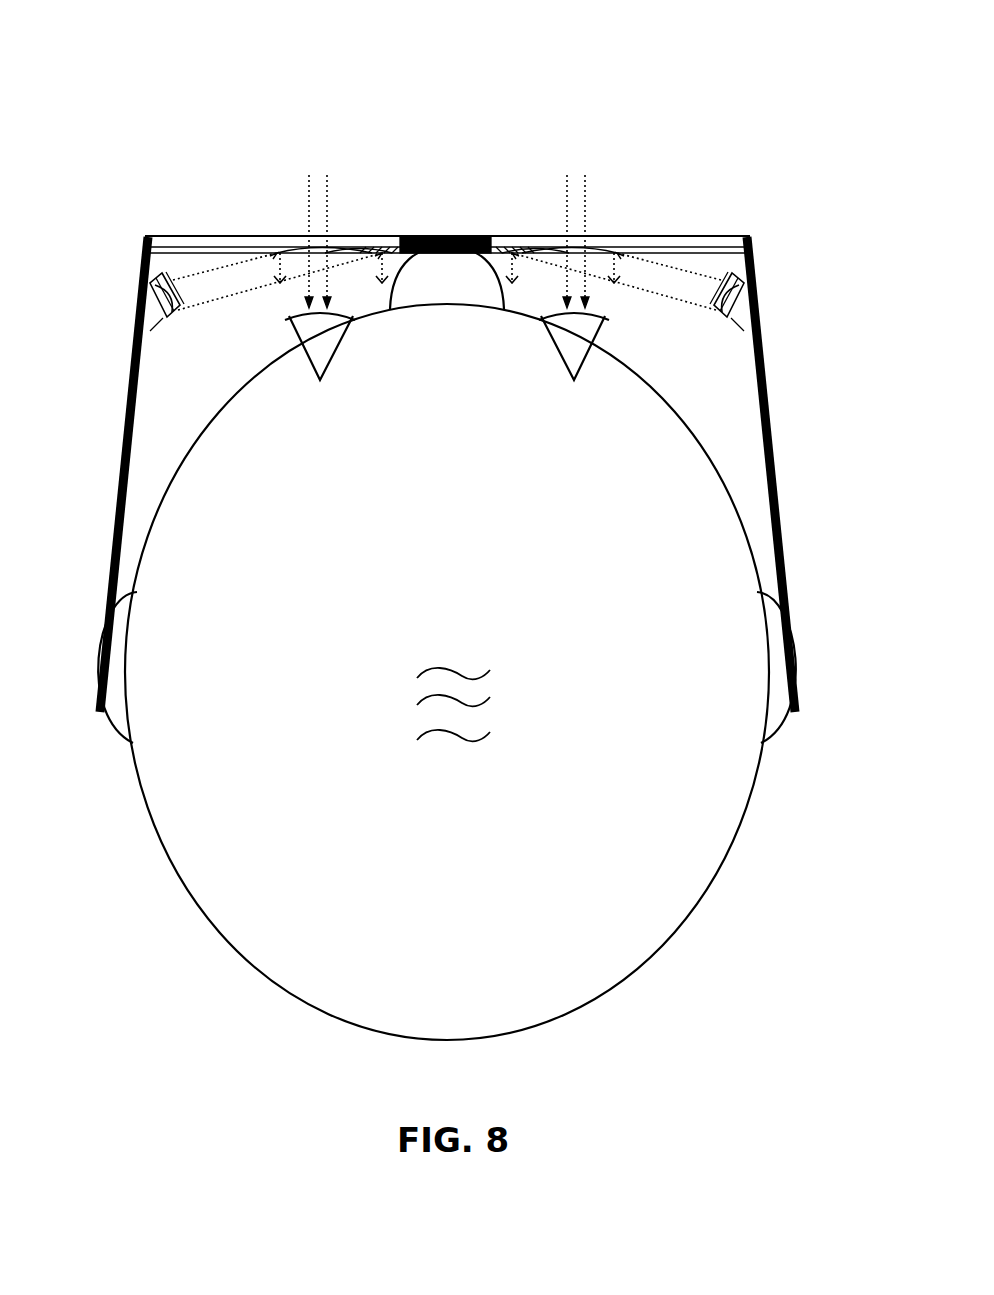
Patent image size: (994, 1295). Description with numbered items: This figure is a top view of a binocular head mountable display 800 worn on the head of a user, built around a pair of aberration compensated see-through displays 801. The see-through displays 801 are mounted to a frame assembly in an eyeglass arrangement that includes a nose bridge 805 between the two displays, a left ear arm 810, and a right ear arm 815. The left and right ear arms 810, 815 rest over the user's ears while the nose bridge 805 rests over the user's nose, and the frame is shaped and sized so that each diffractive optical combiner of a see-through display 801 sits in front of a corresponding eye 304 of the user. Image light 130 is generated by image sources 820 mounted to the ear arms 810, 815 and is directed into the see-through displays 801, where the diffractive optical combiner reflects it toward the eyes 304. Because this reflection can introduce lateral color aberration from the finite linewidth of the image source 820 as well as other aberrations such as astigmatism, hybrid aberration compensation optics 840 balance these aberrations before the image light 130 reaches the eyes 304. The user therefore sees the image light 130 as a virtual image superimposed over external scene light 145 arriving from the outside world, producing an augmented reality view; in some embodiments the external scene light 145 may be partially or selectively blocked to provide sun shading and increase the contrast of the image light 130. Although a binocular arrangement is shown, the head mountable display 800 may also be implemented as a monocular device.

The binocular head mountable display 800 is at (452, 361).
The see-through display 801 is at (153, 172).
The nose bridge 805 is at (478, 236).
The left ear arm 810 is at (120, 468).
The right ear arm 815 is at (775, 468).
The hybrid aberration compensation optics 840 is at (160, 273).
The image source 820 is at (157, 320).
The image light 130 is at (206, 298).
The external scene light 145 is at (309, 176).
The eye 304 is at (337, 372).